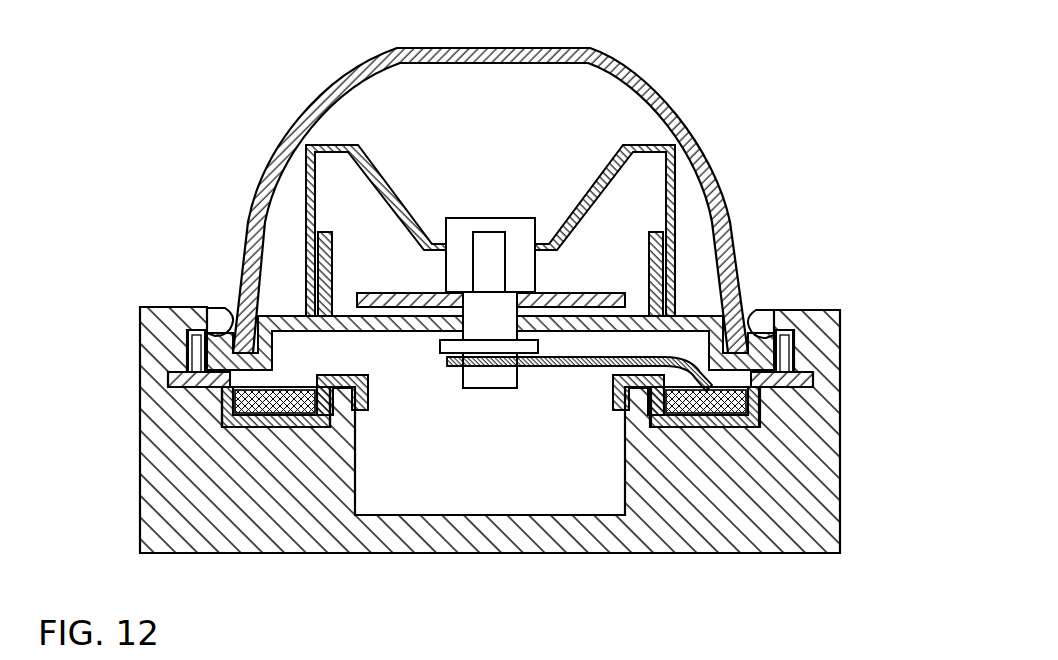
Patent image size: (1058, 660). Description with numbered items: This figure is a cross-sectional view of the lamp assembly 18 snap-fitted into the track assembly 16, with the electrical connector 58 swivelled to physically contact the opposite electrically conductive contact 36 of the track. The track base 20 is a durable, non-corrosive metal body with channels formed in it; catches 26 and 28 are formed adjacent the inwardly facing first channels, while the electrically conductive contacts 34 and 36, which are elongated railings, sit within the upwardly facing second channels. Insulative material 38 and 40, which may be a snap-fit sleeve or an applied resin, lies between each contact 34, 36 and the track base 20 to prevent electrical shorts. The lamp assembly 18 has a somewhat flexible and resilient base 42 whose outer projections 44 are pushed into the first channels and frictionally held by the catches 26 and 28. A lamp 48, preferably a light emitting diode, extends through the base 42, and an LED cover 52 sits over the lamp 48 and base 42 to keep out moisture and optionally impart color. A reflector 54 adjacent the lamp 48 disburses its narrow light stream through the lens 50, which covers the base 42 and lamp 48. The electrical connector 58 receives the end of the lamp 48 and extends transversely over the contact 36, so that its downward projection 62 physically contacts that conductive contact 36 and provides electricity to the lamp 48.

The track assembly 16 is at (850, 212).
The lamp assembly 18 is at (745, 92).
The track base 20 is at (150, 498).
The catch 26 is at (218, 332).
The catch 28 is at (767, 328).
The electrically conductive contact 34 is at (283, 390).
The electrically conductive contact 36 is at (695, 427).
The insulative material 38 is at (368, 397).
The insulative material 40 is at (620, 410).
The base 42 is at (358, 330).
The projections 44 is at (192, 340).
The lamp 48 is at (498, 262).
The lens 50 is at (552, 50).
The LED cover 52 is at (480, 218).
The reflector 54 is at (610, 178).
The electrical connector 58 is at (575, 366).
The downward projection 62 is at (712, 420).